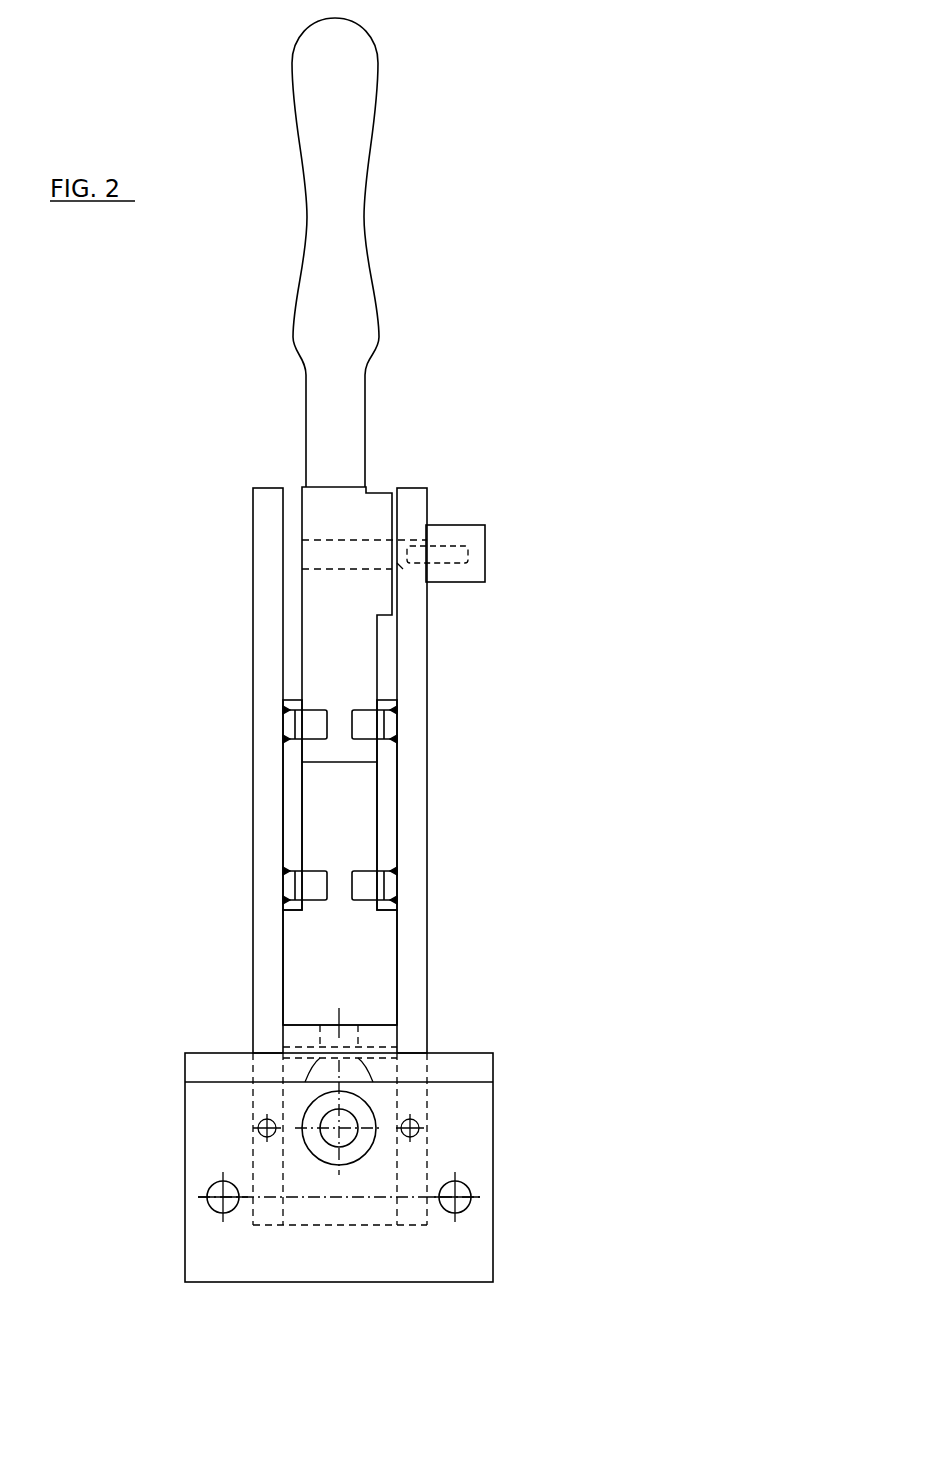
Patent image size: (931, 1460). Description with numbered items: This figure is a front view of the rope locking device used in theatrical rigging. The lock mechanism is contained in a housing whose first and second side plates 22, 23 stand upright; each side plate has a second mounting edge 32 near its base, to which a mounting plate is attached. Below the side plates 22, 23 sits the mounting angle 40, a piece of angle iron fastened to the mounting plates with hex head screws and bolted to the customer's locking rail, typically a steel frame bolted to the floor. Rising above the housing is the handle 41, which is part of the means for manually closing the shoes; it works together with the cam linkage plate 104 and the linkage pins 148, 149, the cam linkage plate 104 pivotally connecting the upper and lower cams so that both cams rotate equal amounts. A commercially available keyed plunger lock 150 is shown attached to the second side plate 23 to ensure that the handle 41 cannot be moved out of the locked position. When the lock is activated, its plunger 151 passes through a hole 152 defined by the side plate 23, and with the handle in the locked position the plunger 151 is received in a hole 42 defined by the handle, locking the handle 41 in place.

The handle 41 is at (370, 232).
The hole 42 is at (348, 540).
The first side plate 22 is at (253, 883).
The second side plate 23 is at (426, 795).
The keyed plunger lock 150 is at (474, 538).
The plunger 151 is at (440, 552).
The hole 152 is at (403, 563).
The cam linkage plate 104 is at (290, 827).
The linkage pin 148 is at (367, 722).
The linkage pin 149 is at (397, 893).
The second mounting edge 32 is at (373, 1035).
The mounting angle 40 is at (493, 1166).